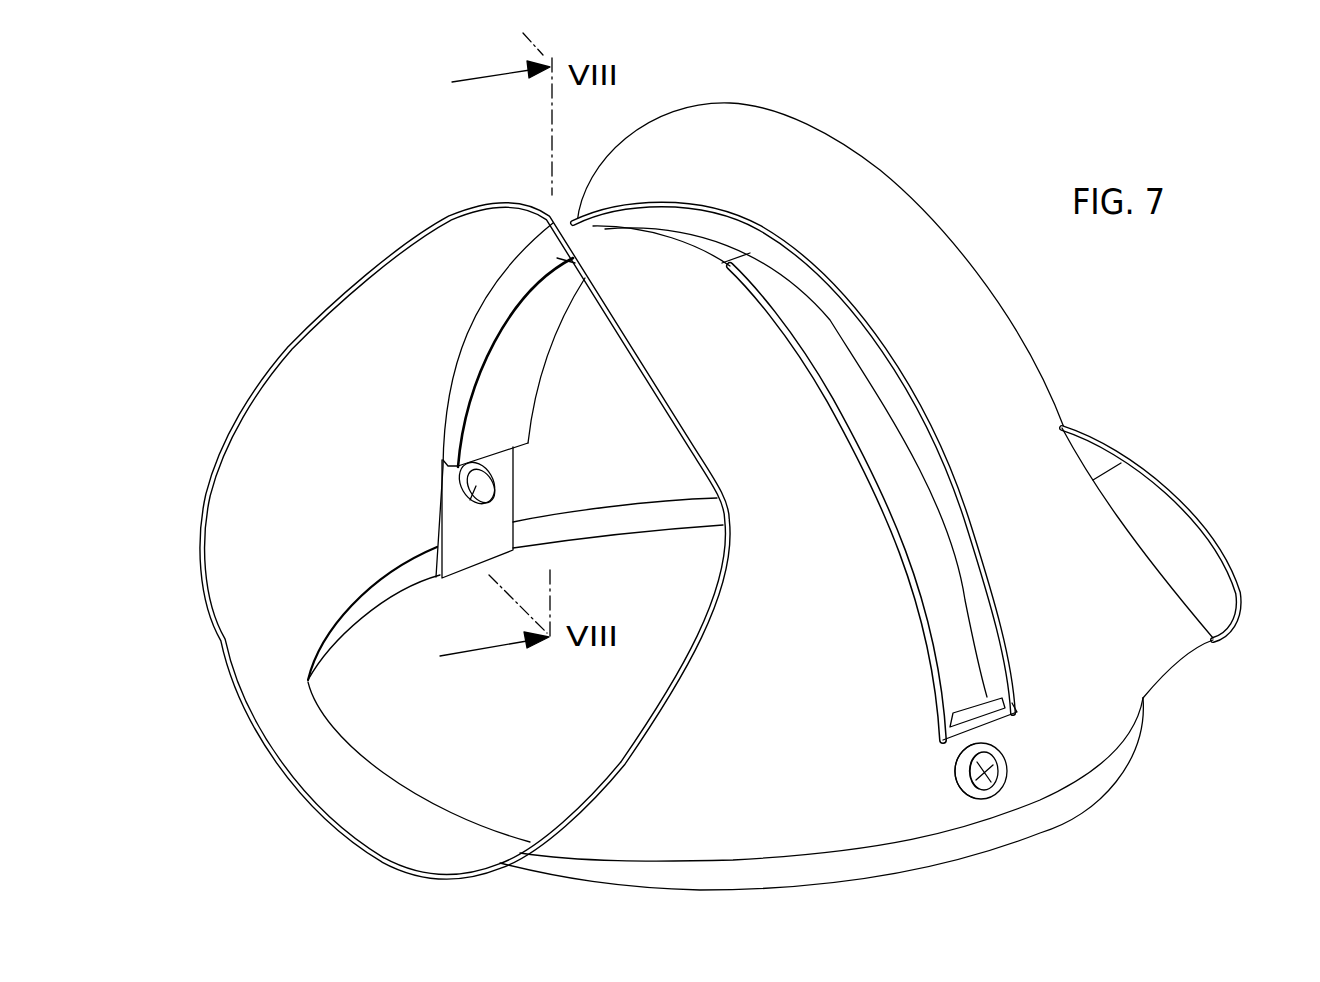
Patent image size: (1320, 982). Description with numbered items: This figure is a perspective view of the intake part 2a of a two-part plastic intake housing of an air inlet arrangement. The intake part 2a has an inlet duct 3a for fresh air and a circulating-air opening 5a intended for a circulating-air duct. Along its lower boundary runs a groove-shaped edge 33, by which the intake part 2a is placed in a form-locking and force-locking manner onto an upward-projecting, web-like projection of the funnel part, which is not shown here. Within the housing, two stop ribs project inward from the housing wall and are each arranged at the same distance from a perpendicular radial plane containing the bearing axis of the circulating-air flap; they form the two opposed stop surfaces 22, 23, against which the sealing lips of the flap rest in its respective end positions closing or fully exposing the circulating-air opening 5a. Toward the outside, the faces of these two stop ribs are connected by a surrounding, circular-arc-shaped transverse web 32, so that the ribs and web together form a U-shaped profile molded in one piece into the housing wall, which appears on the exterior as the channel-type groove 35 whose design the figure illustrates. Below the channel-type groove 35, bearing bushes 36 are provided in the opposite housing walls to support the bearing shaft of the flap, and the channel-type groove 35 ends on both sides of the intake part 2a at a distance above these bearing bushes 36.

The intake part 2a is at (840, 700).
The inlet duct 3a is at (303, 430).
The circulating-air opening 5a is at (1083, 374).
The stop surface 22 is at (549, 360).
The stop surface 23 is at (450, 418).
The transverse web 32 is at (535, 430).
The groove-shaped edge 33 is at (1005, 830).
The channel-type groove 35 is at (886, 457).
The bearing bush 36 is at (473, 500).